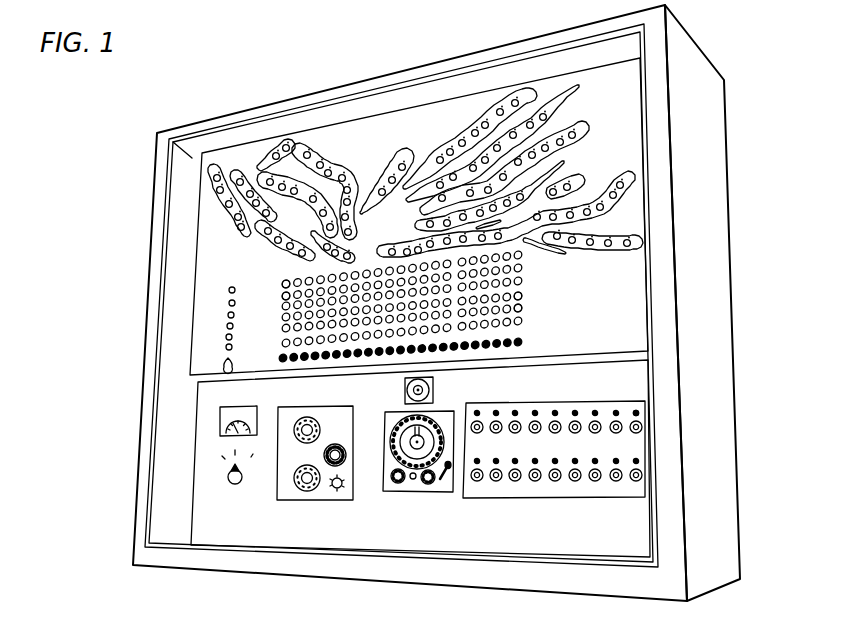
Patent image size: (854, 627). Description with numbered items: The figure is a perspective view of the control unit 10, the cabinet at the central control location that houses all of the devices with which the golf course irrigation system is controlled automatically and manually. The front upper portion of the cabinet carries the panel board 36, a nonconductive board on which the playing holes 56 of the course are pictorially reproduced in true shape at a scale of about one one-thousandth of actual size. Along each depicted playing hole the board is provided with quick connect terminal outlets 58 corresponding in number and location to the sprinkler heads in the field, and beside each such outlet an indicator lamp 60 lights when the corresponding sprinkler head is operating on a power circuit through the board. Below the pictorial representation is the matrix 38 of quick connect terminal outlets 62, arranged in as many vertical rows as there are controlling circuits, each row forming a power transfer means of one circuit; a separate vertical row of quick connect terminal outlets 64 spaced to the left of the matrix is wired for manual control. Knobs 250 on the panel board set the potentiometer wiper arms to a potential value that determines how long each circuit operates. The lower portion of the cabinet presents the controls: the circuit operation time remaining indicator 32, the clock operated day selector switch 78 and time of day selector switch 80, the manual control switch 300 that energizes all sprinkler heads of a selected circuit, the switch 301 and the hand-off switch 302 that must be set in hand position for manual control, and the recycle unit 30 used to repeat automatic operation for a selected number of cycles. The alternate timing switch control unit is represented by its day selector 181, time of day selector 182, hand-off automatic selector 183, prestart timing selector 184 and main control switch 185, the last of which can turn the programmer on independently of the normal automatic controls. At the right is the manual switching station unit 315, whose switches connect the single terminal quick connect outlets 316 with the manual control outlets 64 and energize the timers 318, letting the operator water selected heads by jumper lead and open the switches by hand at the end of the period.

The control unit 10 is at (736, 206).
The panel board 36 is at (630, 303).
The matrix of quick connect terminals 38 is at (413, 303).
The playing holes 56 is at (444, 140).
The quick connect terminal outlets 58 is at (338, 168).
The indicator lamp 60 is at (257, 190).
The quick connect terminal outlet 62 is at (285, 293).
The quick connect terminal outlets 64 is at (228, 290).
The knobs 250 is at (514, 351).
The hand-off switch 302 is at (223, 363).
The recycle unit 30 is at (433, 391).
The circuit operation time remaining indicator 32 is at (249, 406).
The clock operated day selector switch 78 is at (309, 419).
The clock operated time of day selector switch 80 is at (300, 491).
The manual control switch 300 is at (344, 450).
The switch 301 is at (343, 487).
The day selector 181 is at (451, 472).
The time of day selector 182 is at (449, 466).
The hand-off automatic selector 183 is at (233, 485).
The prestart timing selector 184 is at (401, 483).
The main control switch 185 is at (432, 484).
The manual switching station unit 315 is at (554, 433).
The single terminal quick connect outlets 316 is at (637, 410).
The timers 318 is at (558, 423).